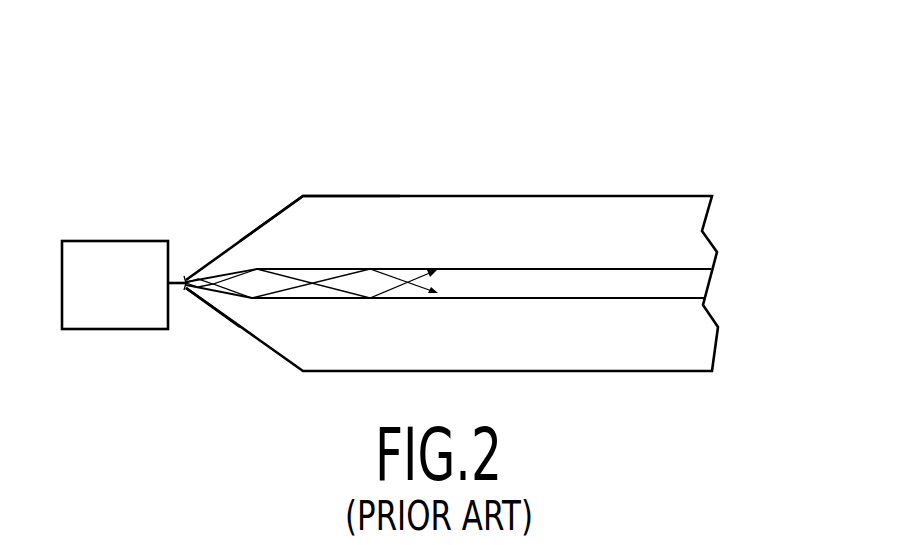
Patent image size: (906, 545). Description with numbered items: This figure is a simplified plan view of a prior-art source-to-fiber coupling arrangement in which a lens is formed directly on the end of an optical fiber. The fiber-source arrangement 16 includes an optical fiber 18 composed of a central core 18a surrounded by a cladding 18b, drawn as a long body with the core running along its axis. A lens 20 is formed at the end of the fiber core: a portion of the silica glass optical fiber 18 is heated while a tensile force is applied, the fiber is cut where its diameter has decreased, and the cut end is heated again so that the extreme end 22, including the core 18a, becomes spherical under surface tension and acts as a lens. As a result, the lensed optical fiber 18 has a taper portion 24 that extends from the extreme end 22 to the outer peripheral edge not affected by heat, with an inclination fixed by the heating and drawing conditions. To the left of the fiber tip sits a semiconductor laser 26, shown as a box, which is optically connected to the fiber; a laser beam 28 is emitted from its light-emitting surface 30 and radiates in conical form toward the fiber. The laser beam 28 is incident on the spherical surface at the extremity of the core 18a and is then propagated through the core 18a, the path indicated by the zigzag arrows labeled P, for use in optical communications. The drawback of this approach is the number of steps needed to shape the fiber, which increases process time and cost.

The fiber-source arrangement 16 is at (664, 80).
The optical fiber 18 is at (609, 176).
The core 18a is at (678, 280).
The cladding 18b is at (685, 207).
The lens 20 is at (237, 178).
The extreme end 22 is at (184, 276).
The taper portion 24 is at (268, 217).
The semiconductor laser 26 is at (96, 330).
The laser beam 28 is at (183, 292).
The light-emitting surface 30 is at (168, 283).
The light path P is at (443, 285).